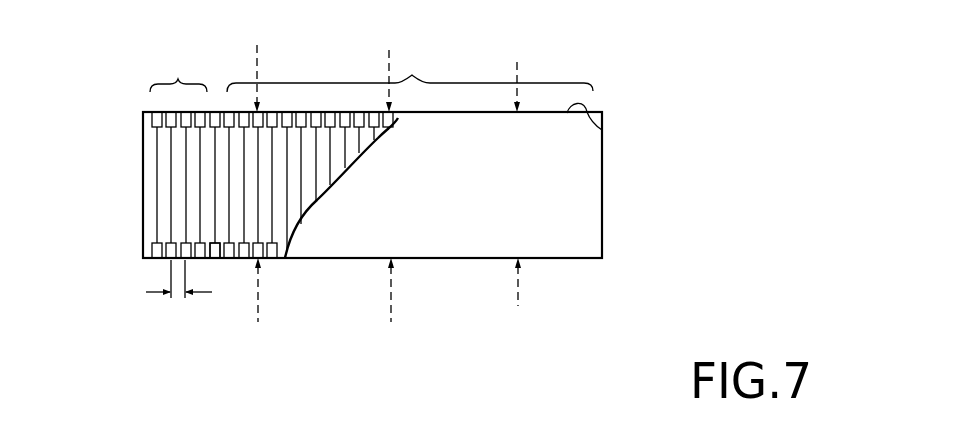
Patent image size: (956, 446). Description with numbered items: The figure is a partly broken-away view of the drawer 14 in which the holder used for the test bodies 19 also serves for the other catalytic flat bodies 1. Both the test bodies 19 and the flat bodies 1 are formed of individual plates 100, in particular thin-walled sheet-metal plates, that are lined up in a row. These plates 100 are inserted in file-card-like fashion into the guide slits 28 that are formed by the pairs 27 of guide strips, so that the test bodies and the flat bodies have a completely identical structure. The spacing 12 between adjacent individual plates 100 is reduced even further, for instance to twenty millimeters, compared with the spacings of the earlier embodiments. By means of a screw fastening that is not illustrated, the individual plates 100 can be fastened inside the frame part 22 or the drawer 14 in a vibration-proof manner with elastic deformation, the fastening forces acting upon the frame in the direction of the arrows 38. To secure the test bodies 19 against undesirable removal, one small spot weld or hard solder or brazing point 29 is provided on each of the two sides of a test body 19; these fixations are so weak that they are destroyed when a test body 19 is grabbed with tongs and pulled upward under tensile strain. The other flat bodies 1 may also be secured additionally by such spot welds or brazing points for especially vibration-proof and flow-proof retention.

The drawer 14 is at (602, 186).
The spot weld or hard solder or brazing point 29 is at (140, 122).
The individual plates 100 is at (245, 193).
The guide slits 28 is at (380, 134).
The pairs of guide strips 27 is at (213, 259).
The spacing k12 12 is at (173, 295).
The test bodies 19 is at (178, 72).
The catalytic flat bodies 1 is at (410, 70).
The arrows 38 is at (517, 48).
The frame part 22 is at (602, 131).